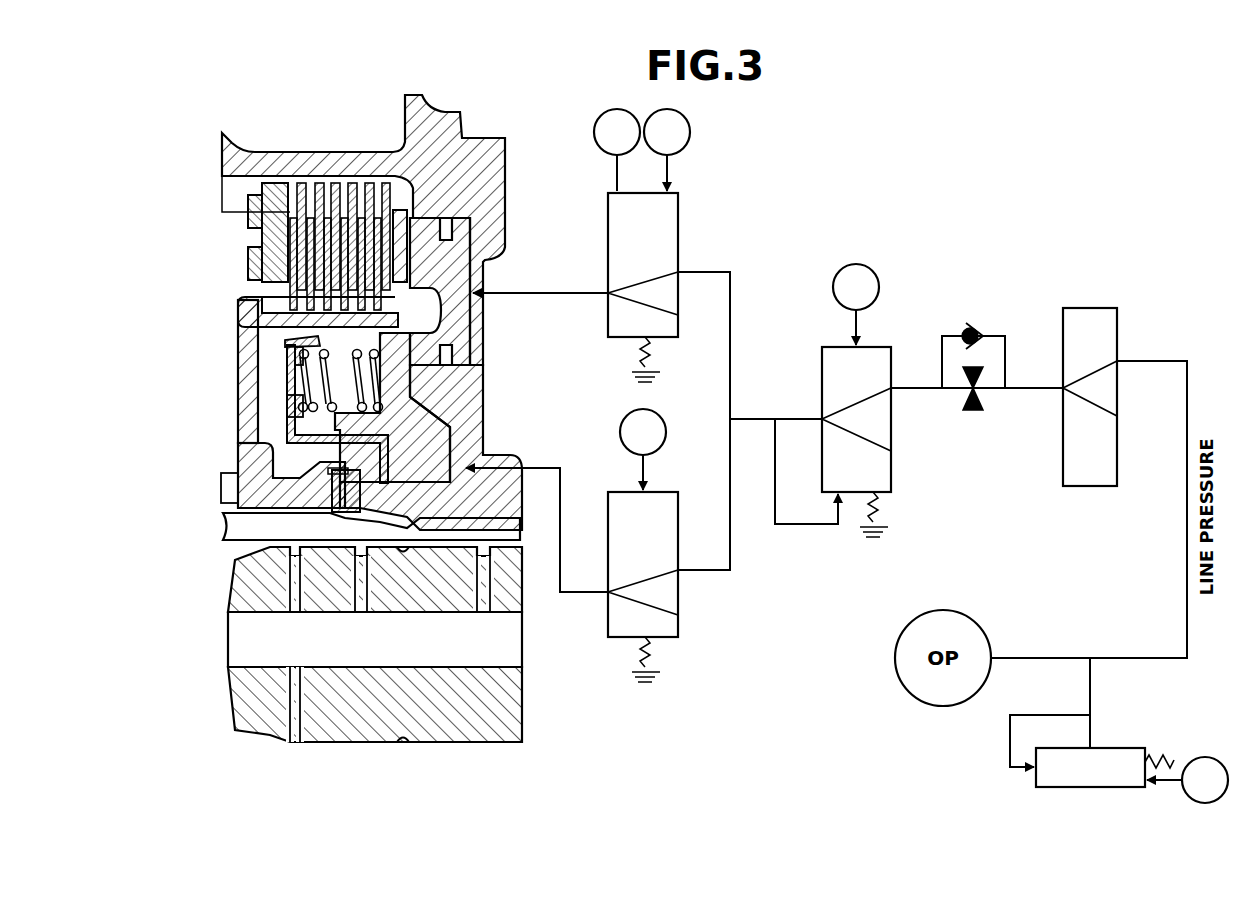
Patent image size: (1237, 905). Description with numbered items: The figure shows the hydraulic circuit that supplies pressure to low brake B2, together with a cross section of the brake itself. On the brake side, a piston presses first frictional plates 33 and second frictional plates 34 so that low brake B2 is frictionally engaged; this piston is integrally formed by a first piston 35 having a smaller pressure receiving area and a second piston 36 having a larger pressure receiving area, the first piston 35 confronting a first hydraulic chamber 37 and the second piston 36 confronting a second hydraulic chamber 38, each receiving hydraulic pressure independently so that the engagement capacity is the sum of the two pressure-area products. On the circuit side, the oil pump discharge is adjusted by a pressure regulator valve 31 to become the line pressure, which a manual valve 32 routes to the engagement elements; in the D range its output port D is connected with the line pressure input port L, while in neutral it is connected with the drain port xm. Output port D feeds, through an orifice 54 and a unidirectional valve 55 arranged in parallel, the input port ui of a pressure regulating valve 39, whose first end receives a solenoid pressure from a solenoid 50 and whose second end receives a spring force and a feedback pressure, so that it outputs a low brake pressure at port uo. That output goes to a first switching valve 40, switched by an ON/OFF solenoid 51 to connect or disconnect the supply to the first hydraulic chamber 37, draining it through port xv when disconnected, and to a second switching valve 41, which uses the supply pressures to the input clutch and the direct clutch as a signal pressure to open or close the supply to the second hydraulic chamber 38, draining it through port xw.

The low brake B2 is at (353, 124).
The pressure regulator valve 31 is at (1063, 789).
The manual valve 32 is at (1092, 488).
The first frictional plates 33 is at (318, 185).
The second frictional plates 34 is at (262, 298).
The first piston 35 is at (396, 383).
The second piston 36 is at (453, 268).
The first hydraulic chamber 37 is at (458, 444).
The second hydraulic chamber 38 is at (470, 312).
The pressure regulating valve 39 is at (822, 366).
The first switching valve 40 is at (680, 503).
The second switching valve 41 is at (680, 213).
The solenoid 50 is at (857, 264).
The ON/OFF solenoid 51 is at (662, 415).
The orifice 54 is at (973, 412).
The unidirectional valve 55 is at (963, 326).